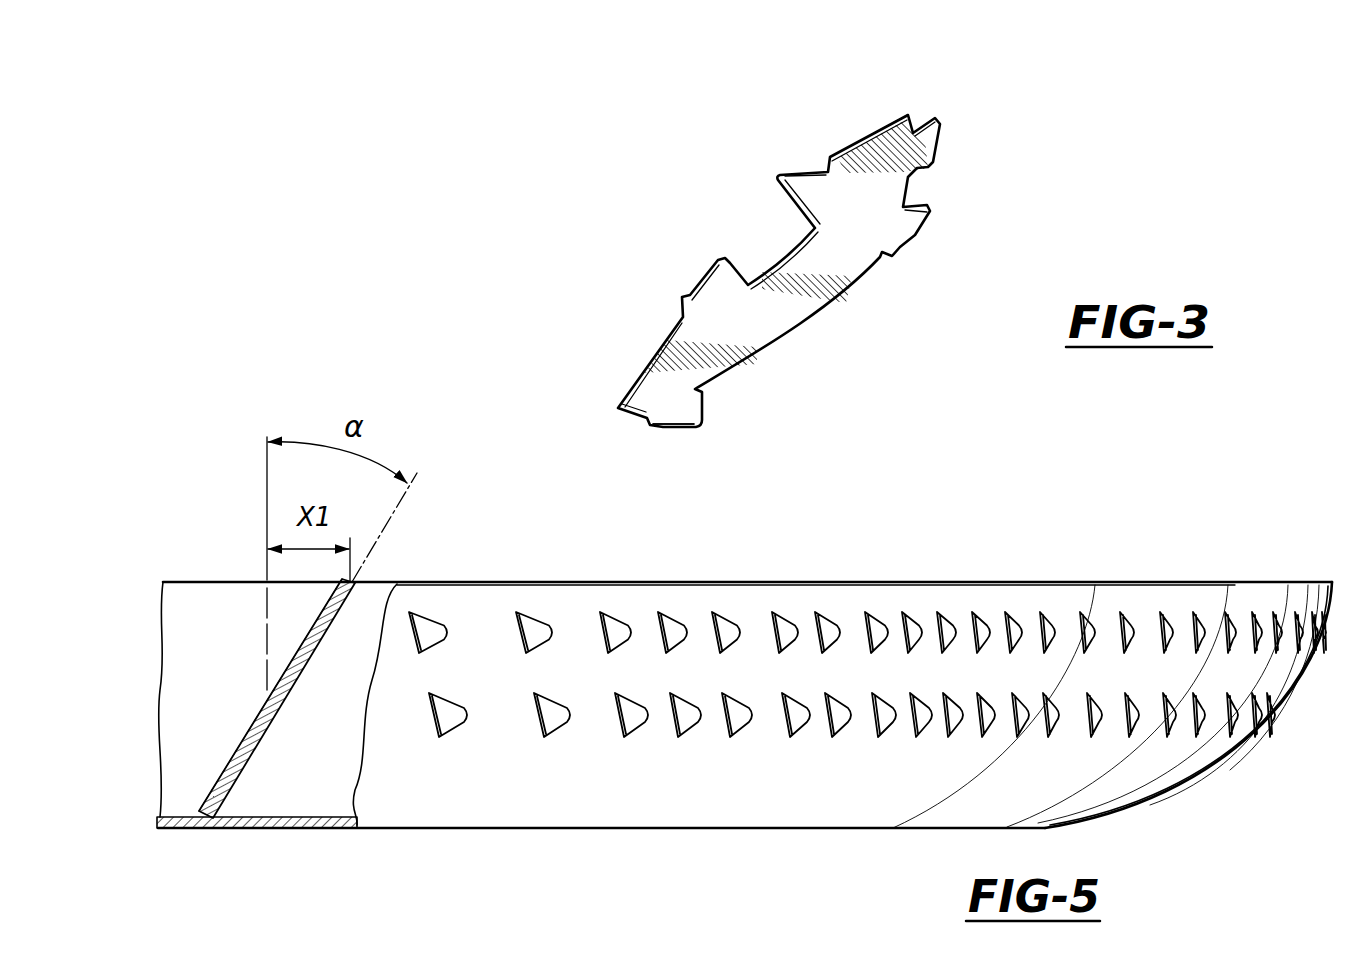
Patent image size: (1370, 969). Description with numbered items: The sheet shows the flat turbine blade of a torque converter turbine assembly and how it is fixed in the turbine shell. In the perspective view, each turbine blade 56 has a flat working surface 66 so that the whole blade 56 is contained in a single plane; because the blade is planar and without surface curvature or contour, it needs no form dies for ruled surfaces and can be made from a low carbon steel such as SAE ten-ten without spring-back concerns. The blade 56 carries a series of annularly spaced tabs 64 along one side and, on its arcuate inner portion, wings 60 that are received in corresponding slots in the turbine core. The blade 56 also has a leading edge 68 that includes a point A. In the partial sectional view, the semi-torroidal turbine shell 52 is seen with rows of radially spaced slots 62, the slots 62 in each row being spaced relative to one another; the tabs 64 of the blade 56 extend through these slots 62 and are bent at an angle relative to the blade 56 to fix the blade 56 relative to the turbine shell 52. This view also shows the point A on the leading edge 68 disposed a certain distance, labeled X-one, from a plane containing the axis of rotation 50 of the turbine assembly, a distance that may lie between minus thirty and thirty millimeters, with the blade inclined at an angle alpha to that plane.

In FIG. 5, the axis 50 is at (266, 467).
In FIG. 5, the turbine shell 52 is at (777, 780).
In FIG. 3, the turbine blade 56 is at (859, 282).
In FIG. 5, the turbine blade 56 is at (237, 745).
In FIG. 3, the wings 60 is at (797, 187).
In FIG. 5, the slots 62 is at (773, 623).
In FIG. 3, the tabs 64 is at (930, 143).
In FIG. 5, the tabs 64 is at (435, 629).
In FIG. 3, the flat working surface 66 is at (803, 308).
In FIG. 5, the flat working surface 66 is at (262, 717).
In FIG. 3, the leading edge 68 is at (900, 113).
In FIG. 3, the point A is at (866, 139).
In FIG. 5, the point A is at (353, 582).